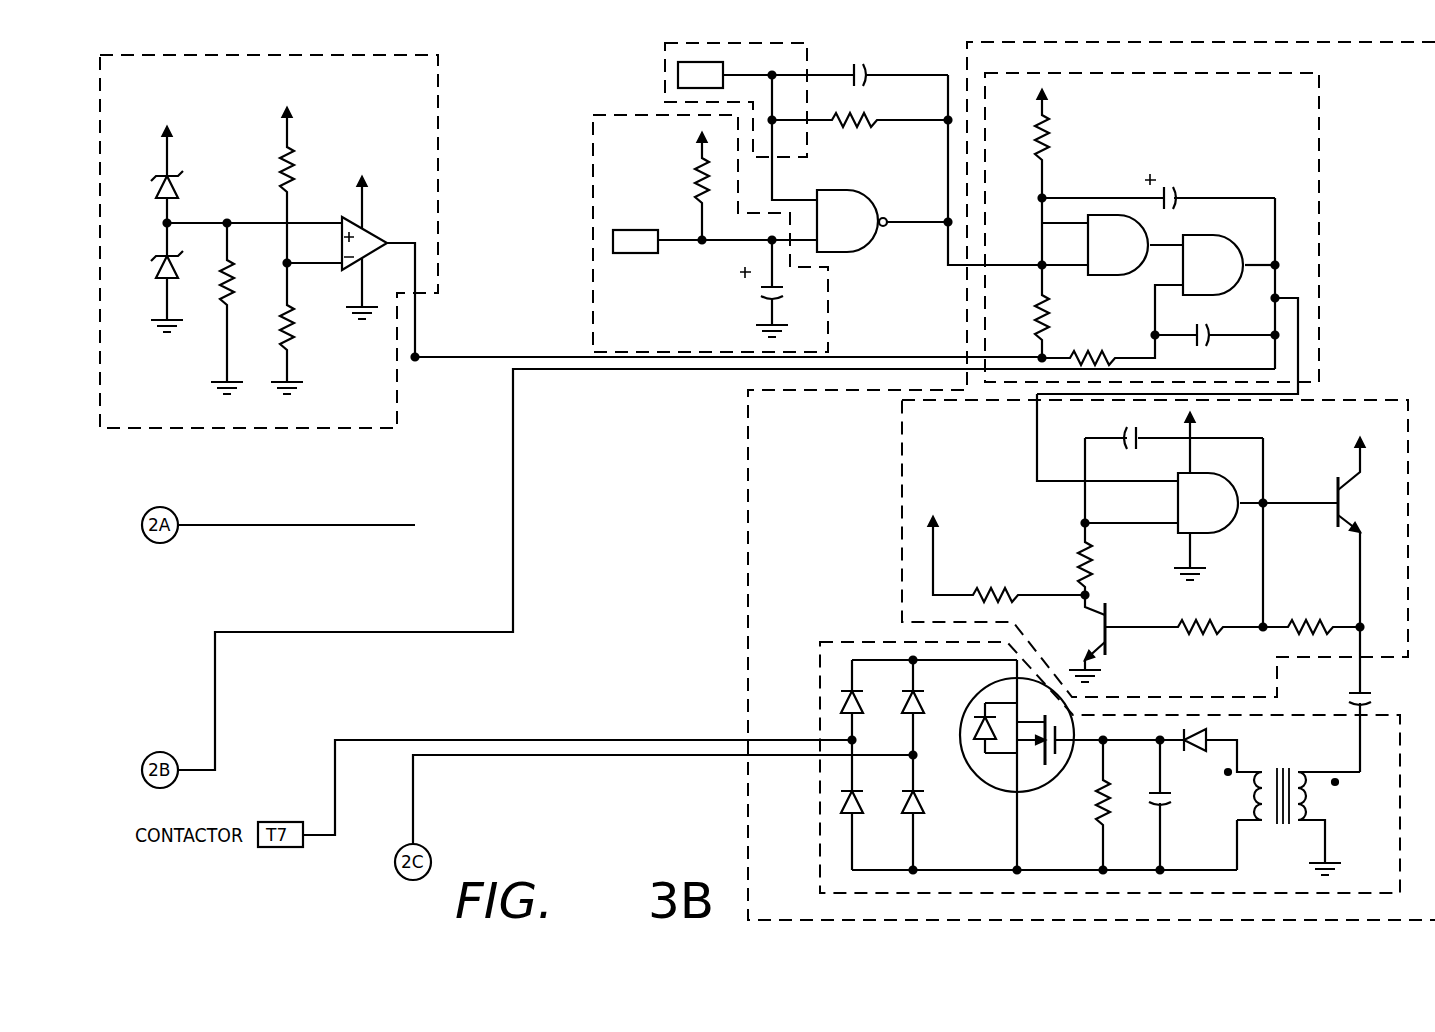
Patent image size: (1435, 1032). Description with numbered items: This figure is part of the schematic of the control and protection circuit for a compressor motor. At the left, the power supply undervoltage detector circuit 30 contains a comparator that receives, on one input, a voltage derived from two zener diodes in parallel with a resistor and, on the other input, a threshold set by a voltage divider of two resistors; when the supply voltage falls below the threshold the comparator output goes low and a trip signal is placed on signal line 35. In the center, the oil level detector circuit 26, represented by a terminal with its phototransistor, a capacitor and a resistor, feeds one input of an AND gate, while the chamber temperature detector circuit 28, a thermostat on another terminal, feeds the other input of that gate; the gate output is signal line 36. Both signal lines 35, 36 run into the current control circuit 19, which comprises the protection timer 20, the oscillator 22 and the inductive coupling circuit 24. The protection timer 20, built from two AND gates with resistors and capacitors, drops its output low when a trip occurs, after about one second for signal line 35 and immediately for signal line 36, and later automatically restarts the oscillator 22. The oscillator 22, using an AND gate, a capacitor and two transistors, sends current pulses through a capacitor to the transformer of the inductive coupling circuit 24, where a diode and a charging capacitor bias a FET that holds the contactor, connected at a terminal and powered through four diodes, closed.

The current control circuit 19 is at (748, 392).
The protection timer 20 is at (1319, 80).
The oscillator 22 is at (1408, 400).
The inductive coupling circuit 24 is at (820, 642).
The oil level detector circuit 26 is at (593, 116).
The chamber temperature detector circuit 28 is at (807, 46).
The power supply undervoltage detector circuit 30 is at (438, 62).
The signal line 35 is at (476, 357).
The signal line 36 is at (946, 246).